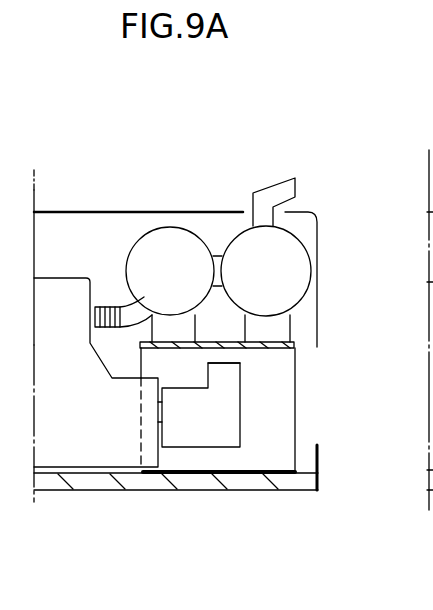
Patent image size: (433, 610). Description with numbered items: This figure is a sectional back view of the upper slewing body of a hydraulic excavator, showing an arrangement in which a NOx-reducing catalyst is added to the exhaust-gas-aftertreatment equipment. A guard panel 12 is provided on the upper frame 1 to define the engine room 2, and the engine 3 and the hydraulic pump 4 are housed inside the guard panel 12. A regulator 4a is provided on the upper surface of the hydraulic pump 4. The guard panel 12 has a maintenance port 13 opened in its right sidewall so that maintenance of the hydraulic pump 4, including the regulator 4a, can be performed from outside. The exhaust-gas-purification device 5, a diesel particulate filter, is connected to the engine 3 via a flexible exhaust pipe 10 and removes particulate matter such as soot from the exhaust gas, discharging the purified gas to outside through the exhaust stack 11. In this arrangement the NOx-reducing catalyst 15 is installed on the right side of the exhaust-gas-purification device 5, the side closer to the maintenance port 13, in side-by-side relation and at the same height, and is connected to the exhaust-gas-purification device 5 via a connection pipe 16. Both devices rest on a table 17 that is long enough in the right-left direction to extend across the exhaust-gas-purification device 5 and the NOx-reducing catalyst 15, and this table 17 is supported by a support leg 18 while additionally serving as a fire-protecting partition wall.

The upper frame 1 is at (156, 490).
The engine room 2 is at (313, 333).
The engine 3 is at (88, 450).
The hydraulic pump 4 is at (241, 431).
The regulator 4a is at (232, 362).
The exhaust-gas-purification device 5 is at (136, 240).
The flexible exhaust pipe 10 is at (100, 305).
The exhaust stack 11 is at (276, 186).
The guard panel 12 is at (165, 211).
The maintenance port 13 is at (325, 396).
The NOx-reducing catalyst 15 is at (310, 247).
The connection pipe 16 is at (216, 253).
The table 17 is at (216, 342).
The support leg 18 is at (252, 470).